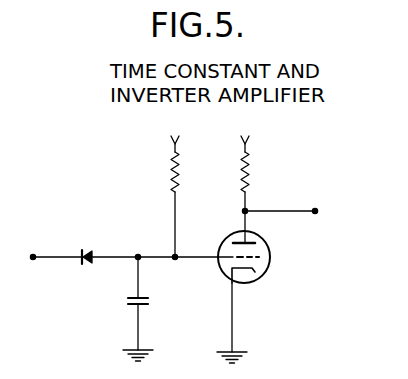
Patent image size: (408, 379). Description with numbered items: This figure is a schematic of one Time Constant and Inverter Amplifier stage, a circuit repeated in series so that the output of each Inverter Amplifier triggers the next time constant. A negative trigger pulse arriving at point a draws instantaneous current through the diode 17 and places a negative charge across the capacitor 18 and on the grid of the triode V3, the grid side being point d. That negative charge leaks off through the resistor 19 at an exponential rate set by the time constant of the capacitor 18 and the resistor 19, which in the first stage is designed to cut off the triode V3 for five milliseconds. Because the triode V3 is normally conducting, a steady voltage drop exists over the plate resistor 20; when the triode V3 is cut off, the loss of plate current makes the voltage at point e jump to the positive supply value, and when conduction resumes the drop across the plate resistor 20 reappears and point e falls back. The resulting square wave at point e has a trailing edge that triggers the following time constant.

The diode 17 is at (86, 251).
The capacitor 18 is at (143, 296).
The resistor 19 is at (189, 169).
The plate resistor 20 is at (259, 169).
The triode V3 is at (269, 248).
The point a is at (55, 245).
The point d is at (198, 255).
The point e is at (277, 211).